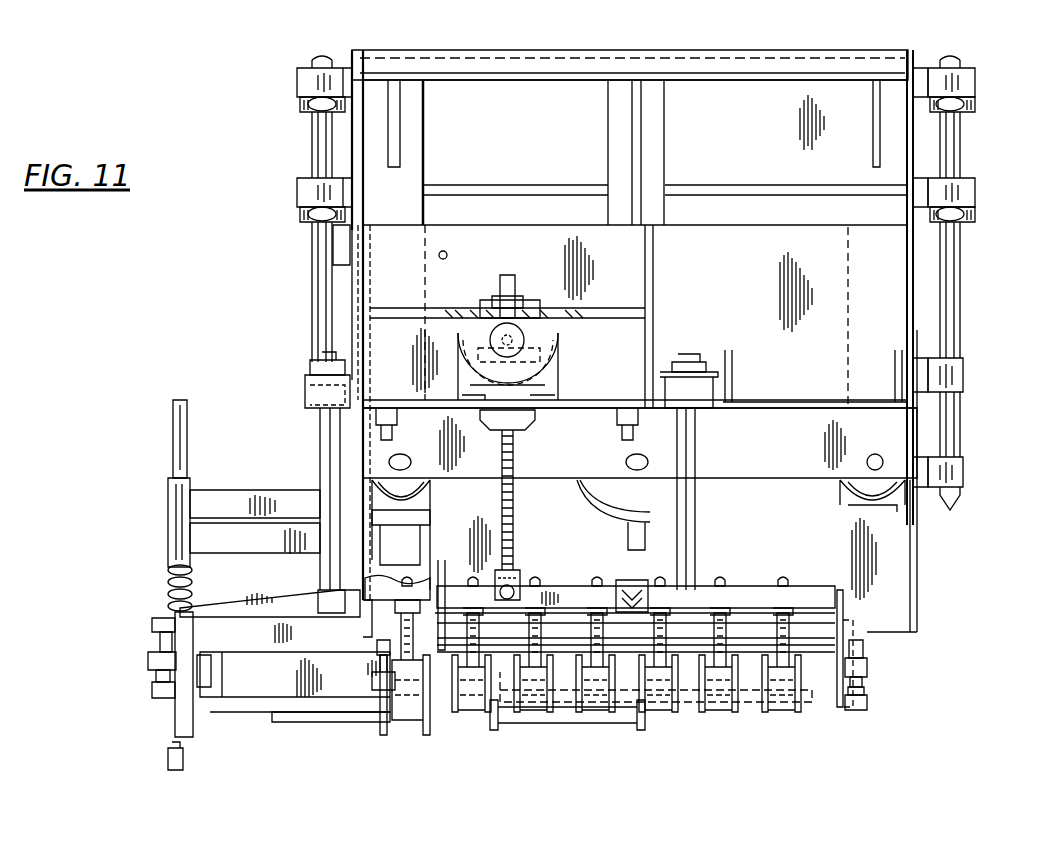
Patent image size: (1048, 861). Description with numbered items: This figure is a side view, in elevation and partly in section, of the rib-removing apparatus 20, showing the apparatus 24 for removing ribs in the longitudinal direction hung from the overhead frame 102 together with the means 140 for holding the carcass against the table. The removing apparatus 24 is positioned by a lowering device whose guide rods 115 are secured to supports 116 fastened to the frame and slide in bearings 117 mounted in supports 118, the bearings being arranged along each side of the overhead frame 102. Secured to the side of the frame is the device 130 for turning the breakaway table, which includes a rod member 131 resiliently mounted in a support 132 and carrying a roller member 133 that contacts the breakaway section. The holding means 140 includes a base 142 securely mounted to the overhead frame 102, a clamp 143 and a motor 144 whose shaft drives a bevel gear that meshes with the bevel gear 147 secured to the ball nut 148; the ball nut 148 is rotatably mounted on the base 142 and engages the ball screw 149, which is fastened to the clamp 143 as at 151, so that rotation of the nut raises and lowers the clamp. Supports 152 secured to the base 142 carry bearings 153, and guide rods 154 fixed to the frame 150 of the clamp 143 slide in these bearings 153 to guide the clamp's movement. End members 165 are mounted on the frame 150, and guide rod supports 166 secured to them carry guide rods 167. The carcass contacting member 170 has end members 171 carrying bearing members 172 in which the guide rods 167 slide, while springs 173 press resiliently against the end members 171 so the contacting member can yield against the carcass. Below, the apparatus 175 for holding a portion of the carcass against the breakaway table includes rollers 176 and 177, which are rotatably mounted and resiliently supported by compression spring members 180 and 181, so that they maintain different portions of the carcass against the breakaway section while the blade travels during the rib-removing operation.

The rib-removing apparatus 20 is at (292, 348).
The rib removing apparatus 24 is at (972, 312).
The overhead frame 102 is at (812, 64).
The guide rods 115 is at (318, 140).
The supports 116 is at (952, 374).
The bearings 117 is at (306, 106).
The supports 118 is at (310, 78).
The device for turning the breakaway table 130 is at (201, 501).
The rod member 131 is at (188, 462).
The support 132 is at (168, 534).
The roller member 133 is at (166, 750).
The means for holding the carcass 140 is at (591, 648).
The base 142 is at (402, 398).
The clamp 143 is at (268, 712).
The motor 144 is at (556, 330).
The bevel gear 147 is at (480, 322).
The ball nut 148 is at (558, 372).
The ball screw 149 is at (515, 455).
The frame 150 is at (584, 586).
The fastening point 151 is at (518, 585).
The supports 152 is at (306, 390).
The bearings 153 is at (308, 366).
The guide rods 154 is at (320, 572).
The end members 165 is at (195, 725).
The guide rod supports 166 is at (150, 624).
The guide rods 167 is at (155, 682).
The carcass contacting member 170 is at (354, 724).
The end members 171 is at (202, 660).
The bearing members 172 is at (150, 665).
The springs 173 is at (158, 640).
The apparatus for holding a portion of the carcass against the breakaway table 175 is at (490, 720).
The roller 176 is at (412, 722).
The roller 177 is at (720, 712).
The compression spring member 180 is at (378, 658).
The compression spring member 181 is at (536, 725).